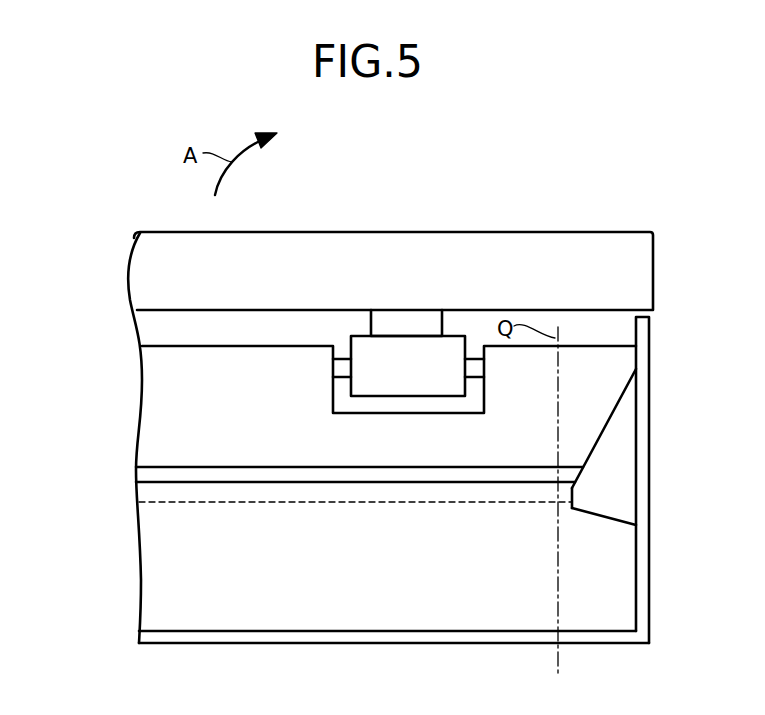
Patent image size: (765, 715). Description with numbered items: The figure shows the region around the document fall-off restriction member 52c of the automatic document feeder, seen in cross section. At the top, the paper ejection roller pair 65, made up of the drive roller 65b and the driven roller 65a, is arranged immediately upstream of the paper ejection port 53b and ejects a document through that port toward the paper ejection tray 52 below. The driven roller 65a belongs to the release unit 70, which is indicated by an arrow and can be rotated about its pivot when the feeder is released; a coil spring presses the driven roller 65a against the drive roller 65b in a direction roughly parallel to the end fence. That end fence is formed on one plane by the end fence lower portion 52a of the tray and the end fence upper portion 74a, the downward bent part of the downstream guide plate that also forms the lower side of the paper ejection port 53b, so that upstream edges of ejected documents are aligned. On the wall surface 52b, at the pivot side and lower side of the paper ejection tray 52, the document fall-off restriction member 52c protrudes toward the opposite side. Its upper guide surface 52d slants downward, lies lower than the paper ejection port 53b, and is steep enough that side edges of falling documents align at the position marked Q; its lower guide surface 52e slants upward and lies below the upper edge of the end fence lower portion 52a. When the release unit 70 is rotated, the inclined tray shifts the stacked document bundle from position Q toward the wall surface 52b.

The paper ejection tray 52 is at (318, 643).
The end fence lower portion 52a is at (157, 560).
The wall surface 52b is at (650, 440).
The document fall-off restriction member 52c is at (628, 502).
The upper guide surface 52d is at (621, 398).
The lower guide surface 52e is at (610, 523).
The paper ejection port 53b is at (155, 329).
The paper ejection roller pair 65 is at (419, 282).
The driven roller 65a is at (417, 382).
The drive roller 65b is at (388, 322).
The release unit 70 is at (108, 449).
The end fence upper portion 74a is at (165, 388).